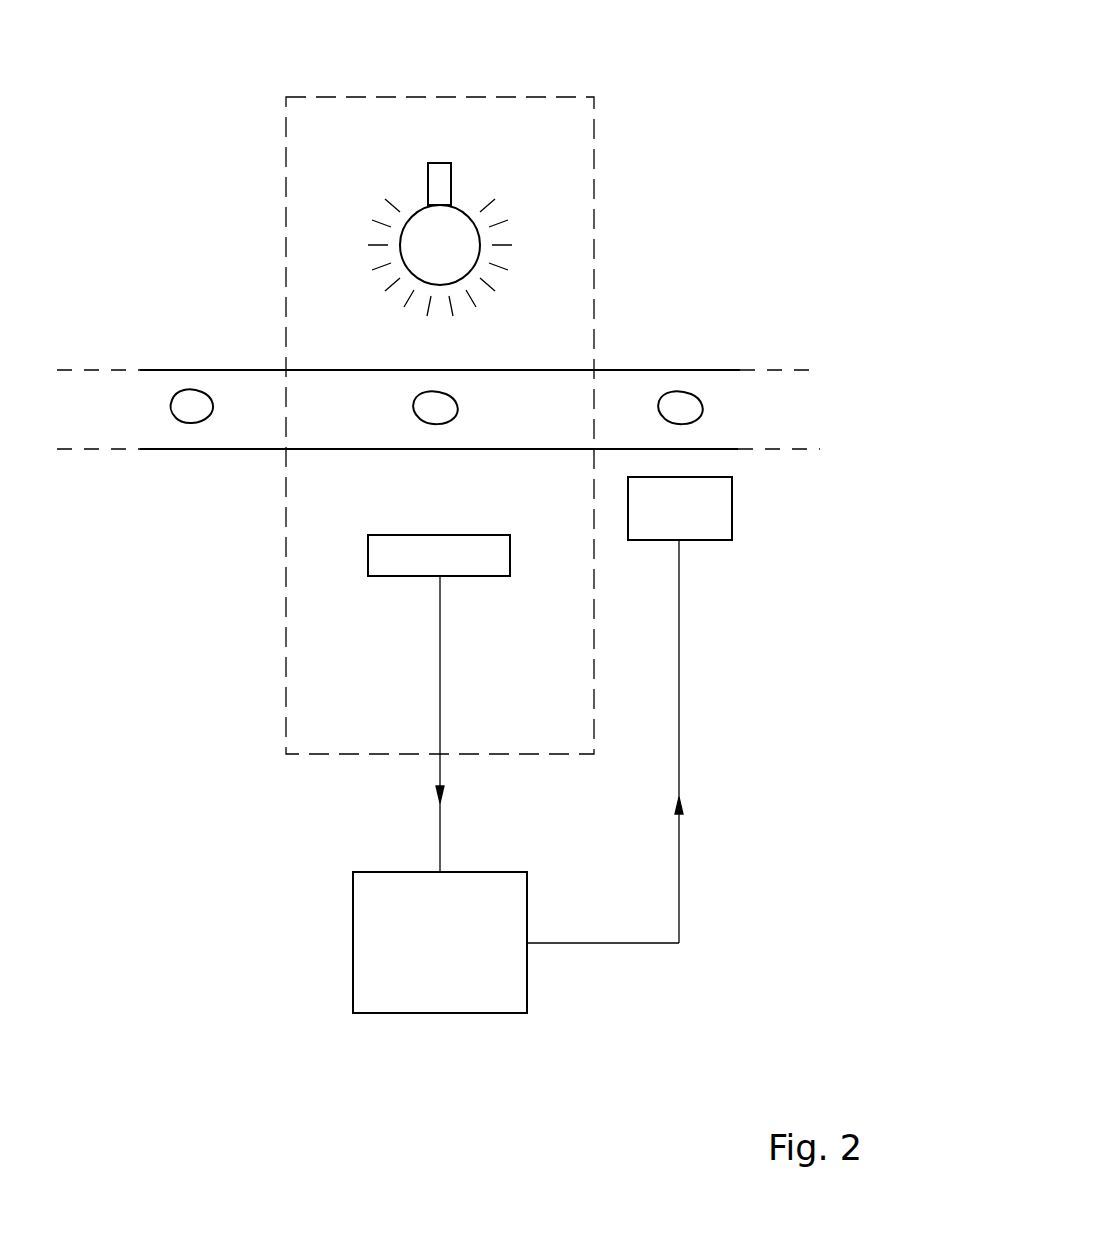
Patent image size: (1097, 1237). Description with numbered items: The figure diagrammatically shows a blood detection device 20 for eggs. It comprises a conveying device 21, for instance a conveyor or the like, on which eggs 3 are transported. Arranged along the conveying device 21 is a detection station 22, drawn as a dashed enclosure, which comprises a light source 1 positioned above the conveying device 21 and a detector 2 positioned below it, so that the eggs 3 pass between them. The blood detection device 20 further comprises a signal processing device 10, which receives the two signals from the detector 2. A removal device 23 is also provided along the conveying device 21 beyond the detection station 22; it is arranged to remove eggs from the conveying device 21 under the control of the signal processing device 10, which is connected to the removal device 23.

The light source 1 is at (463, 209).
The camera / sensor 2 is at (477, 576).
The objects on conveyor 3 is at (192, 390).
The control unit 10 is at (457, 960).
The inspection apparatus 20 is at (688, 120).
The conveyor 21 is at (635, 370).
The detection zone housing 22 is at (594, 228).
The sorting / ejection device 23 is at (697, 523).